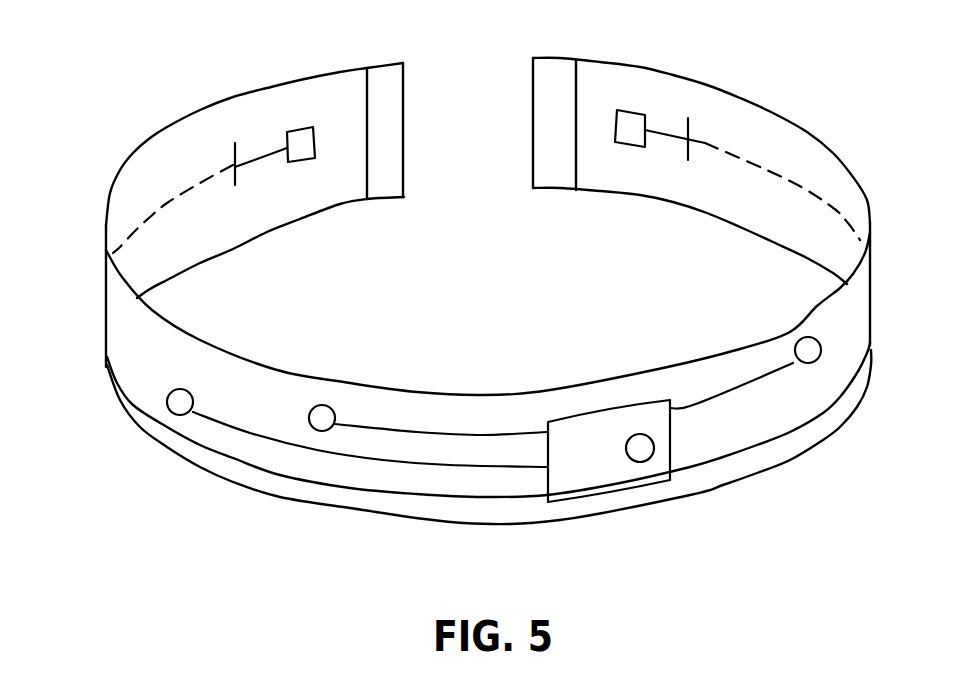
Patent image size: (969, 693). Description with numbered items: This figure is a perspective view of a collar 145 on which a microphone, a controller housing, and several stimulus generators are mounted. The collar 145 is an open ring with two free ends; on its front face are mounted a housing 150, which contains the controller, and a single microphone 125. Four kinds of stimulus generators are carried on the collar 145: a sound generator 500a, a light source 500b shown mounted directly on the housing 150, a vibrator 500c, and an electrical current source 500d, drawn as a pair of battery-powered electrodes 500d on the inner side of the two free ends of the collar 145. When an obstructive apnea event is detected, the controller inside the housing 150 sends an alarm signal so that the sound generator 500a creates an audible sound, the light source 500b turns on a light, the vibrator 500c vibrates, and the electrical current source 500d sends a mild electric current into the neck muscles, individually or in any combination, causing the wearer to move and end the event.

The collar 145 is at (115, 321).
The electrical current source 500d is at (299, 138).
The vibrator 500c is at (176, 405).
The microphone 125 is at (321, 412).
The housing 150 is at (585, 430).
The sound generator 500a is at (807, 350).
The light source 500b is at (641, 452).